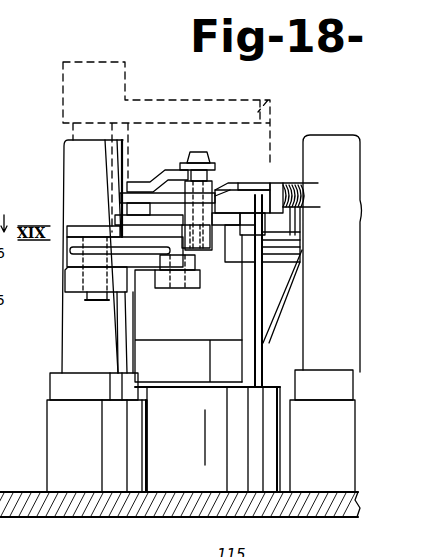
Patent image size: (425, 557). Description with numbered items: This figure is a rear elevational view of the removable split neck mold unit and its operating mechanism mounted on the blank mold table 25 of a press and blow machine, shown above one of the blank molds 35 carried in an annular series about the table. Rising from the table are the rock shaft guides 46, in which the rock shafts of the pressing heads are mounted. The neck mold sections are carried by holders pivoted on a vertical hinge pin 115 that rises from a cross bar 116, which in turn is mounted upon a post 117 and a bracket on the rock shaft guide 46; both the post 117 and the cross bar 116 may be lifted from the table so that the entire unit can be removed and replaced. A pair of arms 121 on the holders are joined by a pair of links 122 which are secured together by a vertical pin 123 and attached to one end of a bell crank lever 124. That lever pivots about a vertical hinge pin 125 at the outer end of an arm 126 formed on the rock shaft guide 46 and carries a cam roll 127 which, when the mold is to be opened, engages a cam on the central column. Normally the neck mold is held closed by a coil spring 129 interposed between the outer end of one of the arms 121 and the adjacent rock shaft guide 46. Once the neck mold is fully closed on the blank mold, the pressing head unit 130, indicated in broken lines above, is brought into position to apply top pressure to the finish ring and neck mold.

The blank mold table 25 is at (28, 492).
The blank mold 35 is at (190, 365).
The rock shaft guide 46 is at (73, 172).
The vertical hinge pin 115 is at (203, 148).
The cross bar 116 is at (237, 225).
The post 117 is at (247, 300).
The arms 121 is at (162, 175).
The links 122 is at (128, 199).
The vertical pin 123 is at (210, 168).
The bell crank lever 124 is at (153, 265).
The vertical hinge pin 125 is at (100, 297).
The arm 126 is at (75, 282).
The cam roll 127 is at (185, 284).
The coil spring 129 is at (297, 190).
The pressing head unit 130 is at (268, 100).